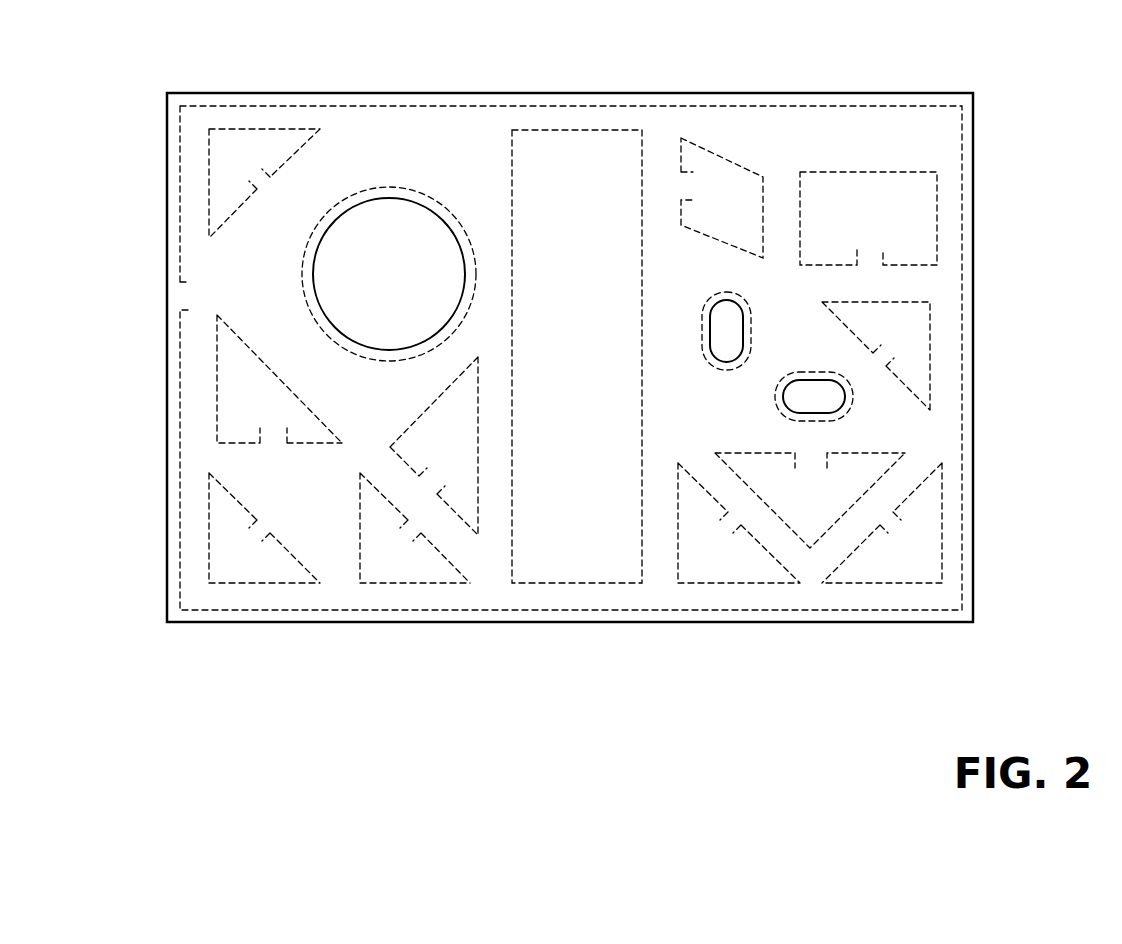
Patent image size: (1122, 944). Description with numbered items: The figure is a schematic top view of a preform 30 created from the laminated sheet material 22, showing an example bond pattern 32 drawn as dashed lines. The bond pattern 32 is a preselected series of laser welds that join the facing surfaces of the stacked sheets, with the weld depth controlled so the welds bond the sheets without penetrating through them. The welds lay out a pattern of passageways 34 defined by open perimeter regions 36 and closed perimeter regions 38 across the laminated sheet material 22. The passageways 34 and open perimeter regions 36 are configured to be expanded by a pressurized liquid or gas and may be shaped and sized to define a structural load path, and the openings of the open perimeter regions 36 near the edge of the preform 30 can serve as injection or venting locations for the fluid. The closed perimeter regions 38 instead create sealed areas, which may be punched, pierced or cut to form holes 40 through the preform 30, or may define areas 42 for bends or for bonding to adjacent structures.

The laminated sheet material 22 is at (978, 168).
The preform 30 is at (925, 93).
The bond pattern 32 is at (498, 95).
The passageways 34 is at (343, 135).
The open perimeter regions 36 is at (242, 130).
The closed perimeter regions 38 is at (433, 195).
The holes 40 is at (414, 198).
The areas for bends or for bonding 42 is at (565, 572).